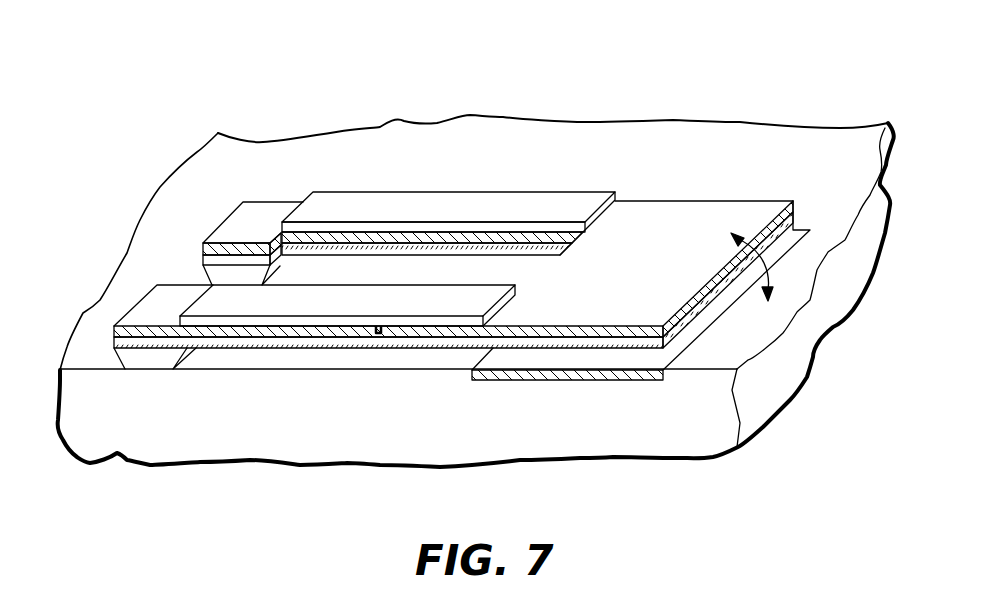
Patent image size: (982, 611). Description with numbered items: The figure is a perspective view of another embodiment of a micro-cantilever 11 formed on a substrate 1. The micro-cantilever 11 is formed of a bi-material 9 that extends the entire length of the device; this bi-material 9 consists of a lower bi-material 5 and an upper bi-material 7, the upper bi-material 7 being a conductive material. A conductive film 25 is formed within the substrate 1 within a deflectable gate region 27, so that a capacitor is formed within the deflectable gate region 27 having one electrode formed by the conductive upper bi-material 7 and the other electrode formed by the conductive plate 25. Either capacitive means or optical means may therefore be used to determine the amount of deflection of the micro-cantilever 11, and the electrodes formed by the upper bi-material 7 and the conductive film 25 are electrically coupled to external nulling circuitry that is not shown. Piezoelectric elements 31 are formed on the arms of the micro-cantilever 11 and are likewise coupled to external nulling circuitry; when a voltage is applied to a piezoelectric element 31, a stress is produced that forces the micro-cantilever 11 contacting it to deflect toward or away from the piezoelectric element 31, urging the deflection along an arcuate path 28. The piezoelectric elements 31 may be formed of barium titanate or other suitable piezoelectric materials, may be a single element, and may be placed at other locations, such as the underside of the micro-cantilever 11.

The substrate 1 is at (260, 173).
The lower bi-material 5 is at (263, 343).
The upper bi-material 7 is at (142, 327).
The bi-material 9 is at (382, 333).
The micro-cantilever 11 is at (580, 177).
The conductive film 25 is at (604, 375).
The deflectable gate region 27 is at (690, 193).
The arcuate path 28 is at (770, 263).
The piezoelectric elements 31 is at (405, 297).